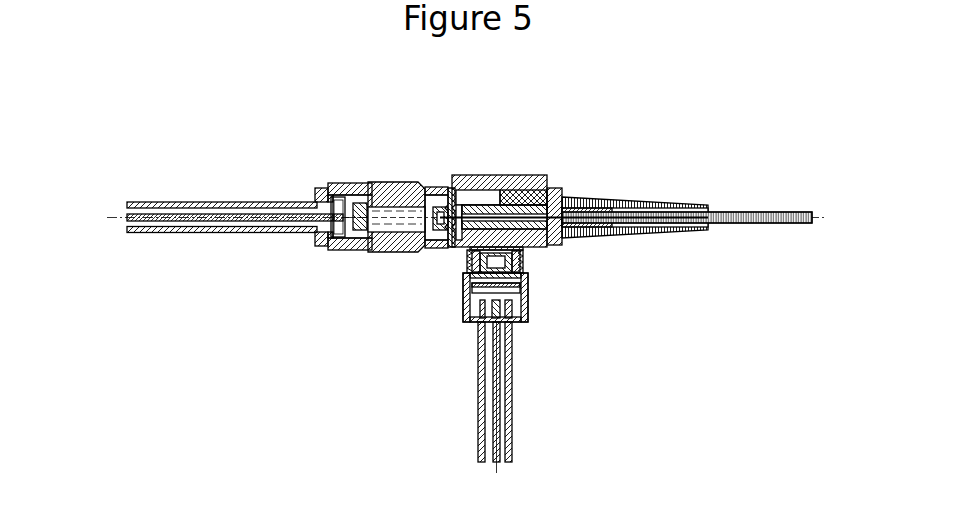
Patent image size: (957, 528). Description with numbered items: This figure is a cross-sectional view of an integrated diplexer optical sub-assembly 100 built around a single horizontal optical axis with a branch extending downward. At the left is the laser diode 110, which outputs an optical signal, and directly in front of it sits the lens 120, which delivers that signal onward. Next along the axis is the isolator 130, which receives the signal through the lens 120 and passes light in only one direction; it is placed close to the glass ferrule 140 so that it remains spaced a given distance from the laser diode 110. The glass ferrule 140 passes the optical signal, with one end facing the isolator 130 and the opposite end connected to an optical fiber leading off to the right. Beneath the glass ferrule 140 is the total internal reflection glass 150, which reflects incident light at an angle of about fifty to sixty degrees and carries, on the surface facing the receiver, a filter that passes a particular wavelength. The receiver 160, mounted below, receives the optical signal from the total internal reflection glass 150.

The integrated diplexer optical sub-assembly 100 is at (540, 133).
The laser diode 110 is at (335, 183).
The lens 120 is at (358, 182).
The isolator 130 is at (444, 186).
The glass ferrule 140 is at (486, 181).
The total internal reflection glass 150 is at (467, 256).
The receiver 160 is at (528, 293).